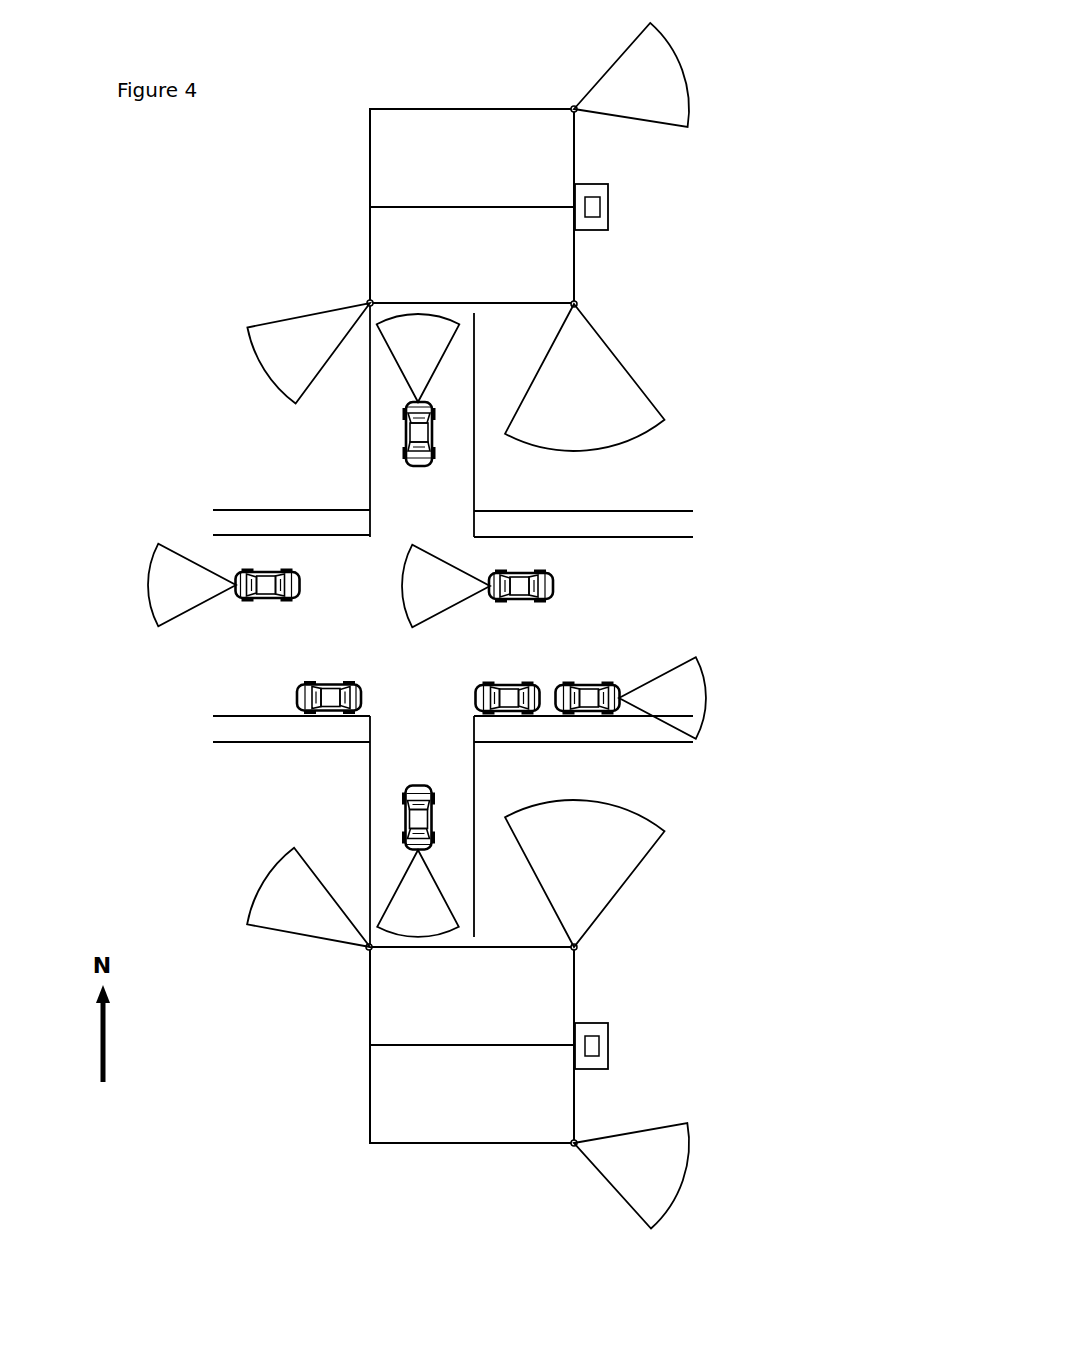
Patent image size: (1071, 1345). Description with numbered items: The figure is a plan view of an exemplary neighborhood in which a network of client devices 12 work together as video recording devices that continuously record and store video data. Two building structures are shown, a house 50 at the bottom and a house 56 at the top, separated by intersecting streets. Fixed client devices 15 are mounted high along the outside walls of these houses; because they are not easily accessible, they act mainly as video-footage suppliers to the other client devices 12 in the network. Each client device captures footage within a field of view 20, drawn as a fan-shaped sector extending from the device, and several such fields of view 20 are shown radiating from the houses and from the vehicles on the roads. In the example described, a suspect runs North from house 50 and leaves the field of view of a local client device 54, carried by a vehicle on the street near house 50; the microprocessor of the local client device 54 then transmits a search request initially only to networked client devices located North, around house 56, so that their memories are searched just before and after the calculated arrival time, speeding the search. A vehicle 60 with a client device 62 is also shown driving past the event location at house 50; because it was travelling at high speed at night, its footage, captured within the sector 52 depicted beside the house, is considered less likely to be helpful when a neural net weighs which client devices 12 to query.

The client device 12 is at (242, 587).
The fixed client device 15 is at (572, 107).
The field of view 20 is at (657, 103).
The house 50 is at (481, 1017).
The sensor field of view 52 is at (617, 868).
The local client device 54 is at (407, 840).
The house 56 is at (448, 257).
The vehicle 60 is at (558, 587).
The client device 62 is at (427, 593).